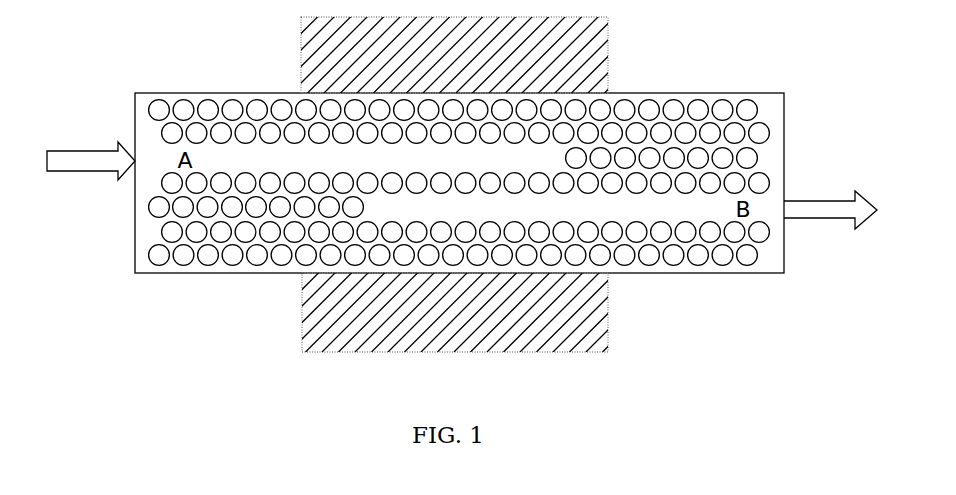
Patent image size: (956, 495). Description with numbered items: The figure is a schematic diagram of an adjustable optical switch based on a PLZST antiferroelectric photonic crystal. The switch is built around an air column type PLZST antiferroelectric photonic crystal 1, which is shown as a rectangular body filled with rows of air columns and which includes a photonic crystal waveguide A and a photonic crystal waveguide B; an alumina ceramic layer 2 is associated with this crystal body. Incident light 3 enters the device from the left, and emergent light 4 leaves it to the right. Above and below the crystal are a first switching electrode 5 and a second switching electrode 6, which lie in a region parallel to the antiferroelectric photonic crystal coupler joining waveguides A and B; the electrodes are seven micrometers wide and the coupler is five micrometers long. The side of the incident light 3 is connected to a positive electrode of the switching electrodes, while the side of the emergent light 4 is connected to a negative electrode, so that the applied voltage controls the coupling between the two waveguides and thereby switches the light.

The air column type PLZST antiferroelectric photonic crystal 1 is at (300, 101).
The alumina ceramic layer 2 is at (157, 100).
The incident light 3 is at (100, 148).
The emergent light 4 is at (853, 197).
The first switching electrode 5 is at (302, 60).
The second switching electrode 6 is at (300, 320).